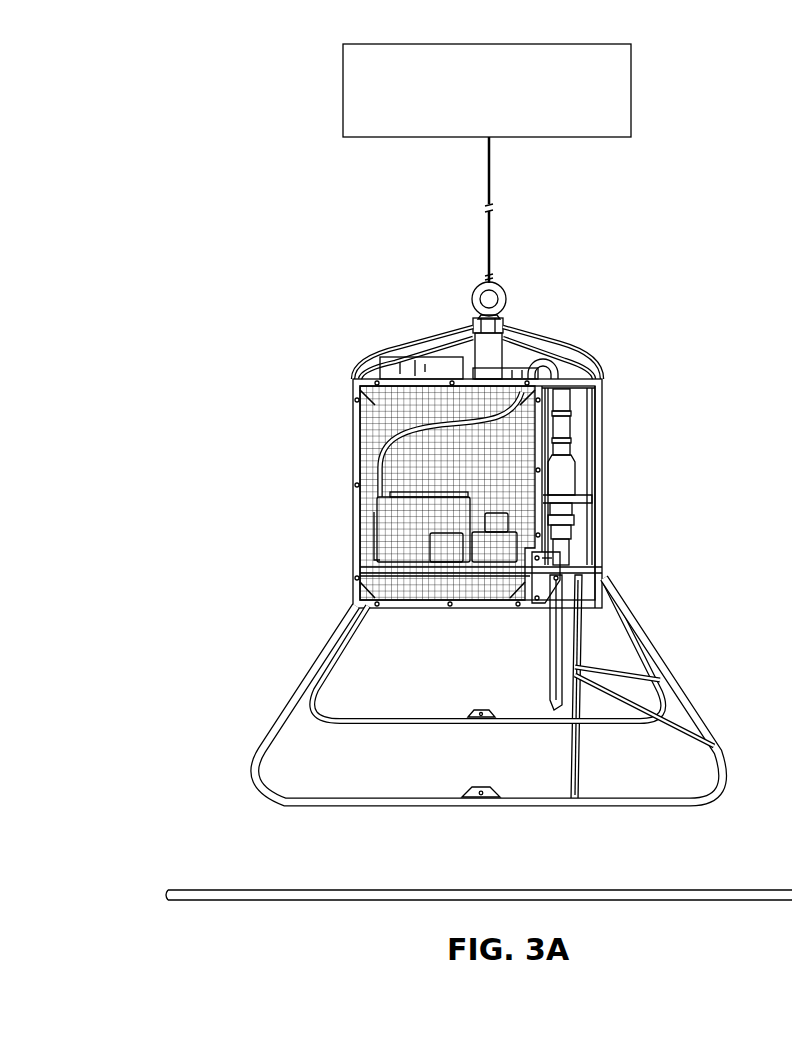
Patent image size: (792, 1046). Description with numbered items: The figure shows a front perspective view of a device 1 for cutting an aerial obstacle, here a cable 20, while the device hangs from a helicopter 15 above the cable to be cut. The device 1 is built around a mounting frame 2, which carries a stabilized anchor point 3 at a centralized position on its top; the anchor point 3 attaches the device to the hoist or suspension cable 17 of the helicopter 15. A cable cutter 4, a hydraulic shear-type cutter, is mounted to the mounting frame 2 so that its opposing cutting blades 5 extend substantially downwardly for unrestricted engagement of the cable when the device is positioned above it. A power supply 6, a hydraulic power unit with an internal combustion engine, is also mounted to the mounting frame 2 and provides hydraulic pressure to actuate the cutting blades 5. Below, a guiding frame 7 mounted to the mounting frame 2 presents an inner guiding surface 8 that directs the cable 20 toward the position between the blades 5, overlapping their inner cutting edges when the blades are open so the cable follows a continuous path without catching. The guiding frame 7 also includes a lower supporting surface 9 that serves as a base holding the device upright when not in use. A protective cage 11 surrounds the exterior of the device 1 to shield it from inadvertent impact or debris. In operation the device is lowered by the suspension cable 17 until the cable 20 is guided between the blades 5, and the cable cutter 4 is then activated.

The device 1 is at (314, 386).
The mounting frame 2 is at (602, 418).
The stabilized anchor point 3 is at (506, 298).
The cable cutter 4 is at (567, 478).
The cutting blades 5 is at (560, 632).
The power supply 6 is at (378, 520).
The guiding frame 7 is at (306, 676).
The inner guiding surface 8 is at (672, 720).
The lower supporting surface 9 is at (335, 806).
The protective cage 11 is at (375, 425).
The helicopter 15 is at (632, 86).
The suspension cable 17 is at (492, 166).
The cable 20 is at (215, 890).